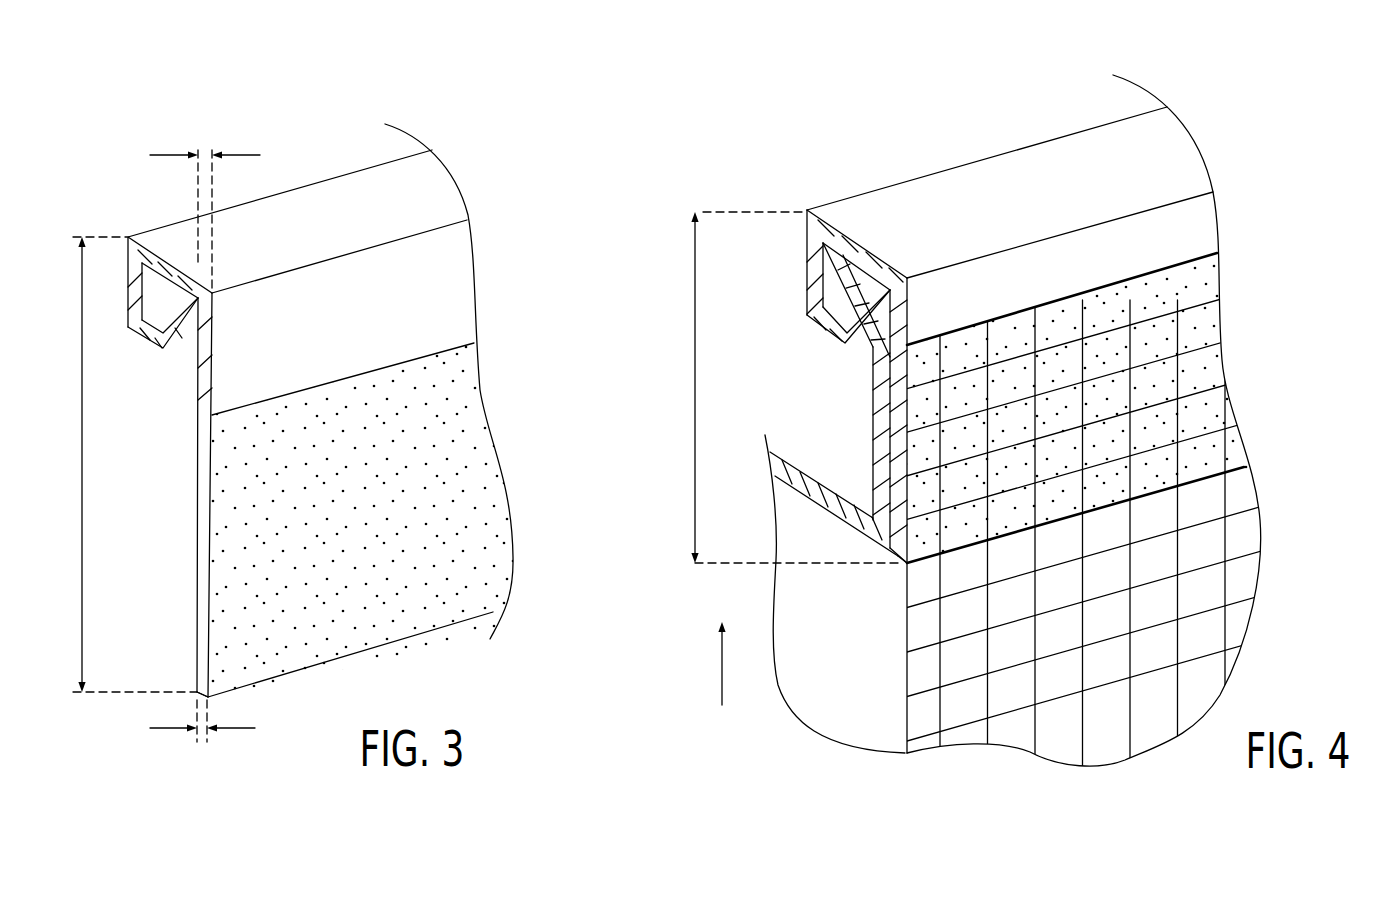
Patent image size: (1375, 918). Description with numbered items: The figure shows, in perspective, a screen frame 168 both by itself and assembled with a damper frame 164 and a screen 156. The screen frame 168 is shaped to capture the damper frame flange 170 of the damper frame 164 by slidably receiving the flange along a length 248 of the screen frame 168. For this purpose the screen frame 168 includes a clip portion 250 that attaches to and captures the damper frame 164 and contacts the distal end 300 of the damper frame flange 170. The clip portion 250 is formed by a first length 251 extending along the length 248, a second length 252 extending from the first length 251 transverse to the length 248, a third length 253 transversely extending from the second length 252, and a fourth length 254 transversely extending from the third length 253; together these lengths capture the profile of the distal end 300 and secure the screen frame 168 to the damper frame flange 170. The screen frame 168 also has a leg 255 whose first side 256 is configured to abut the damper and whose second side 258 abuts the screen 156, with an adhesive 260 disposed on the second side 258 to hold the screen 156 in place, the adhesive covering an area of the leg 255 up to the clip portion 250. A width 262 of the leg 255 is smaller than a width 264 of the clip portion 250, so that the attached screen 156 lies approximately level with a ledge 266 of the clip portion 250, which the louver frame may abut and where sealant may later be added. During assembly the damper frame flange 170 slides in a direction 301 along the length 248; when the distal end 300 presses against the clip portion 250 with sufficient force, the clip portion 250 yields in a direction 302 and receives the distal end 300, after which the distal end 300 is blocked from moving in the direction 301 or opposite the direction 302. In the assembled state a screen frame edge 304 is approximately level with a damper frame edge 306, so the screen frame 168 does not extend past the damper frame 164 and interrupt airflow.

In FIG. 3, the clip portion 250 is at (310, 402).
In FIG. 4, the clip portion 250 is at (1002, 415).
In FIG. 3, the first length 251 is at (207, 378).
In FIG. 4, the first length 251 is at (907, 327).
In FIG. 3, the second length 252 is at (177, 279).
In FIG. 4, the second length 252 is at (873, 285).
In FIG. 3, the third length 253 is at (134, 278).
In FIG. 4, the third length 253 is at (812, 278).
In FIG. 3, the fourth length 254 is at (152, 334).
In FIG. 4, the fourth length 254 is at (837, 332).
In FIG. 3, the leg 255 is at (197, 665).
In FIG. 4, the leg 255 is at (898, 512).
In FIG. 3, the first side 256 is at (158, 519).
In FIG. 3, the second side 258 is at (406, 659).
In FIG. 4, the second side 258 is at (1238, 626).
In FIG. 3, the adhesive 260 is at (458, 476).
In FIG. 3, the width of the leg 262 is at (168, 733).
In FIG. 3, the width of the clip portion 264 is at (242, 153).
In FIG. 3, the ledge 266 is at (438, 295).
In FIG. 4, the ledge 266 is at (1170, 235).
In FIG. 3, the length 248 is at (82, 455).
In FIG. 4, the length 248 is at (693, 387).
In FIG. 3, the screen frame 168 is at (553, 209).
In FIG. 4, the screen frame 168 is at (1003, 105).
In FIG. 4, the damper frame 164 is at (807, 441).
In FIG. 4, the damper frame flange 170 is at (878, 440).
In FIG. 4, the distal end 300 is at (867, 293).
In FIG. 4, the direction 302 is at (821, 186).
In FIG. 4, the screen frame edge 304 is at (903, 565).
In FIG. 4, the damper frame edge 306 is at (802, 485).
In FIG. 4, the direction 301 is at (698, 663).
In FIG. 4, the screen 156 is at (1130, 693).